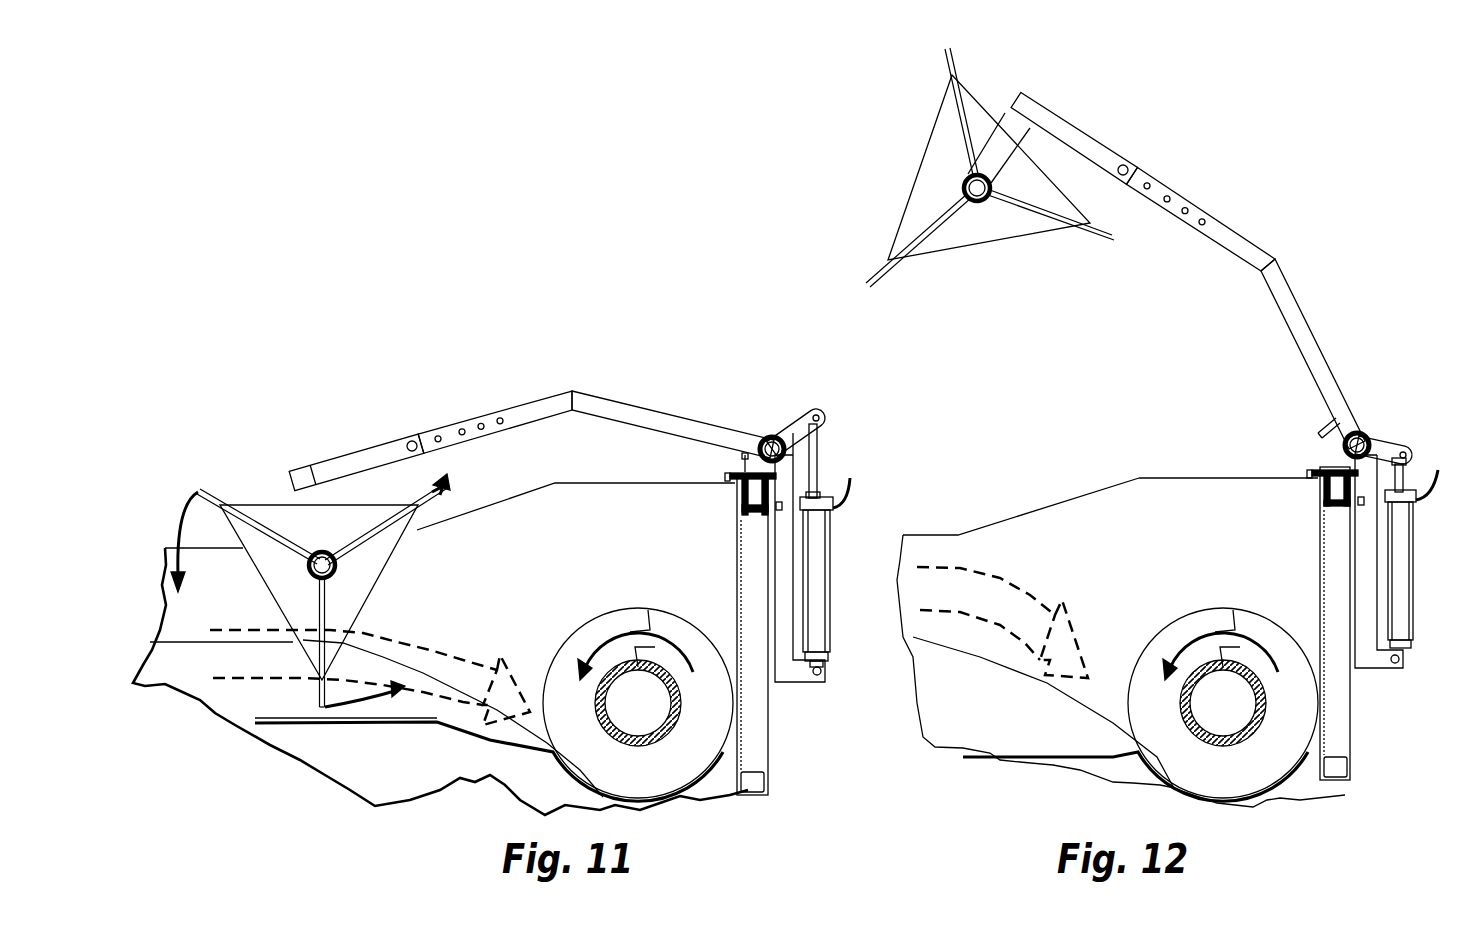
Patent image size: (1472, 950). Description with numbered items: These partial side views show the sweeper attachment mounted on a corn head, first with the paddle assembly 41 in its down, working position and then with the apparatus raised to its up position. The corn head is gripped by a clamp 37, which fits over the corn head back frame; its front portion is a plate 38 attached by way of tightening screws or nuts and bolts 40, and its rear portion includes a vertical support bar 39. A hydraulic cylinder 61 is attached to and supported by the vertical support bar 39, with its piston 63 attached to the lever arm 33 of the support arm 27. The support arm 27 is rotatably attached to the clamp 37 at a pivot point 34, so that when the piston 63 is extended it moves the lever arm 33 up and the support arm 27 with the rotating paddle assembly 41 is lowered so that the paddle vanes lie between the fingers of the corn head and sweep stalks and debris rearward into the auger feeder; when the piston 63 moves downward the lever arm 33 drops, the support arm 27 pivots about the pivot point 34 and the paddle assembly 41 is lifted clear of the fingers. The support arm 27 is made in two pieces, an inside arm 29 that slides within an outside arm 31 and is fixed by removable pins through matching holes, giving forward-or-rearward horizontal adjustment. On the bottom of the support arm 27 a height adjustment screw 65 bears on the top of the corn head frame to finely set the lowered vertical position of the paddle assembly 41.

In FIG. 11, the support arm 27 is at (525, 403).
In FIG. 12, the support arm 27 is at (1320, 370).
In FIG. 11, the inside arm 29 is at (457, 423).
In FIG. 12, the inside arm 29 is at (1163, 193).
In FIG. 11, the outside arm 31 is at (360, 455).
In FIG. 12, the outside arm 31 is at (1088, 150).
In FIG. 11, the lever arm 33 is at (817, 413).
In FIG. 12, the lever arm 33 is at (1400, 452).
In FIG. 11, the pivot point 34 is at (777, 433).
In FIG. 11, the clamp 37 is at (727, 475).
In FIG. 12, the clamp 37 is at (1310, 492).
In FIG. 12, the plate 38 is at (1315, 505).
In FIG. 11, the vertical support bar 39 is at (780, 673).
In FIG. 12, the vertical support bar 39 is at (1360, 673).
In FIG. 12, the nuts and bolts 40 is at (1307, 472).
In FIG. 11, the paddle assembly 41 is at (370, 590).
In FIG. 12, the paddle assembly 41 is at (920, 202).
In FIG. 11, the hydraulic cylinder 61 is at (830, 567).
In FIG. 11, the piston 63 is at (823, 462).
In FIG. 12, the height adjustment screw 65 is at (1320, 443).